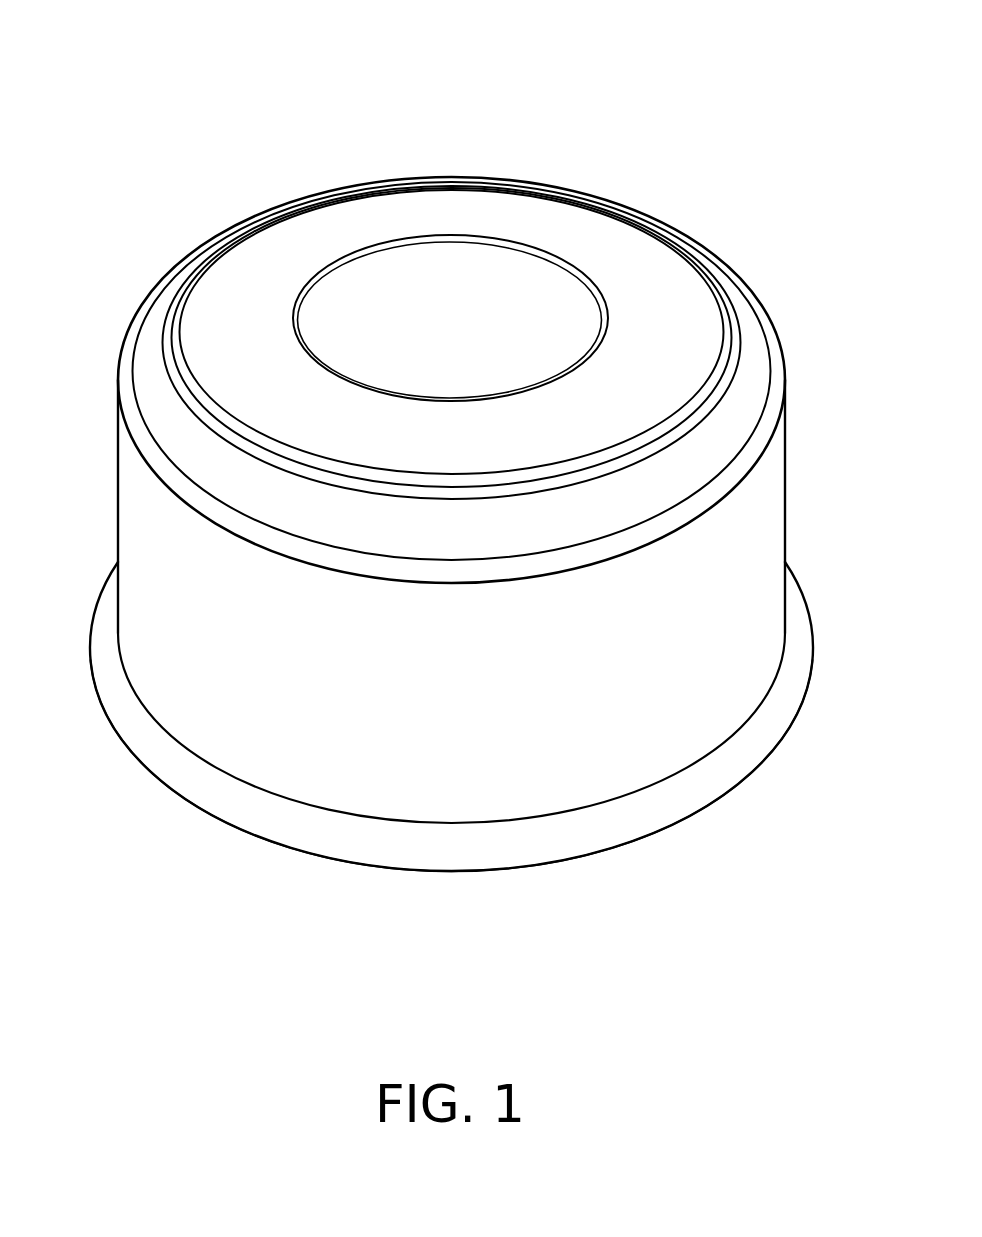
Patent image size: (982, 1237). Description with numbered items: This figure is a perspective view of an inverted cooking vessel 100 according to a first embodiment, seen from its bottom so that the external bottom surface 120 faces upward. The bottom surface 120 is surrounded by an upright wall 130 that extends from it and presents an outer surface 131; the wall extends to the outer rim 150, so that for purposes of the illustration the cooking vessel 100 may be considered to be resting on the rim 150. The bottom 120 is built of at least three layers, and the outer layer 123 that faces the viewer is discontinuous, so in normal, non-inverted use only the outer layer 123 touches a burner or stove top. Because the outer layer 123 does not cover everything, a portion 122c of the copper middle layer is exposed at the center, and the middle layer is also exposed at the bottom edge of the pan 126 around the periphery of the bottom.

The cooking vessel 100 is at (452, 459).
The external bottom surface 120 is at (482, 321).
The exposed portion of middle layer 122c is at (455, 320).
The outer layer 123 is at (303, 246).
The bottom edge of the pan 126 is at (753, 354).
The upright wall 130 is at (118, 486).
The outer surface 131 is at (785, 501).
The rim 150 is at (711, 808).